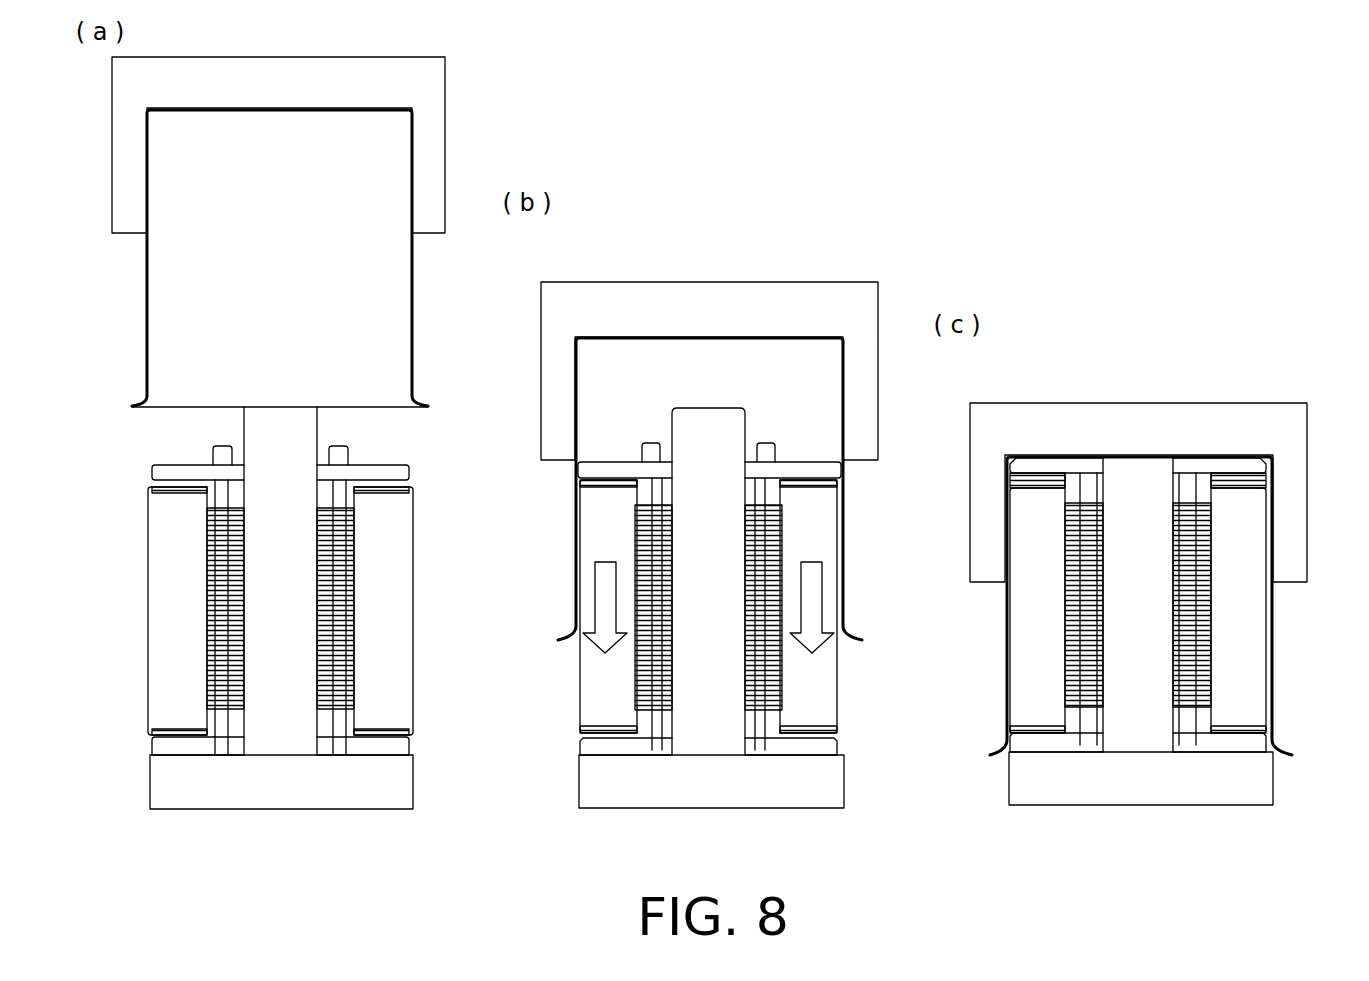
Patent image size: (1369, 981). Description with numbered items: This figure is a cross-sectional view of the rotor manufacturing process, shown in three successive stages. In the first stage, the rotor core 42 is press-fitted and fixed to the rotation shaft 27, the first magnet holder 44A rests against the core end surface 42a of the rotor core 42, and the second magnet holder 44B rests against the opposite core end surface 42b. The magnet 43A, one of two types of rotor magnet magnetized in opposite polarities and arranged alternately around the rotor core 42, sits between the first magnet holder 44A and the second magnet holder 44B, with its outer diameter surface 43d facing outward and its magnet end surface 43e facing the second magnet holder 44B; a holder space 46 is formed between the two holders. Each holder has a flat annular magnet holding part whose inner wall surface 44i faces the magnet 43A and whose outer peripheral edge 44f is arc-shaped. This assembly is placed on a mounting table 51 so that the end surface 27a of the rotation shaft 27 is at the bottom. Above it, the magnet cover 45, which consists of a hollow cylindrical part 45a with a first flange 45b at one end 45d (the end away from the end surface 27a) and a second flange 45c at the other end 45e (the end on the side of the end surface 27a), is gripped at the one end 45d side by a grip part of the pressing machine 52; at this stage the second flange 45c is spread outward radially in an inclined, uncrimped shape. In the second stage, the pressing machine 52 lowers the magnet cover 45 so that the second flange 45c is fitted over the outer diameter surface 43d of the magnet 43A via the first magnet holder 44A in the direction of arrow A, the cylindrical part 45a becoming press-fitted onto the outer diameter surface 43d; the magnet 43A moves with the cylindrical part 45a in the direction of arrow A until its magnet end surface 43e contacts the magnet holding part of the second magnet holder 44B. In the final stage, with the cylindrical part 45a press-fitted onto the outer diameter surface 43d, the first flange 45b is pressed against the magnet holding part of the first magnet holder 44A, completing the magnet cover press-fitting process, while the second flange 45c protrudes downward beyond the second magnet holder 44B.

The pressing machine 52 is at (319, 52).
The magnet cover 45 is at (137, 257).
The cylindrical part 45a is at (404, 287).
The first flange 45b is at (157, 100).
The second flange 45c is at (137, 399).
The one end 45d is at (139, 135).
The other end 45e is at (139, 372).
The rotation shaft 27 is at (248, 492).
The end surface 27a is at (254, 752).
The mounting table 51 is at (182, 792).
The first magnet holder 44A is at (352, 457).
The second magnet holder 44B is at (376, 737).
The inner wall surface 44i is at (144, 482).
The rotor core 42 is at (207, 601).
The core end surface 42a is at (314, 498).
The core end surface 42b is at (322, 729).
The magnet 43A is at (152, 660).
The outer diameter surface 43d is at (140, 554).
The magnet end surface 43e is at (579, 744).
The outer peripheral edge 44f is at (999, 459).
The holder space 46 is at (157, 720).
The arrow A is at (587, 595).